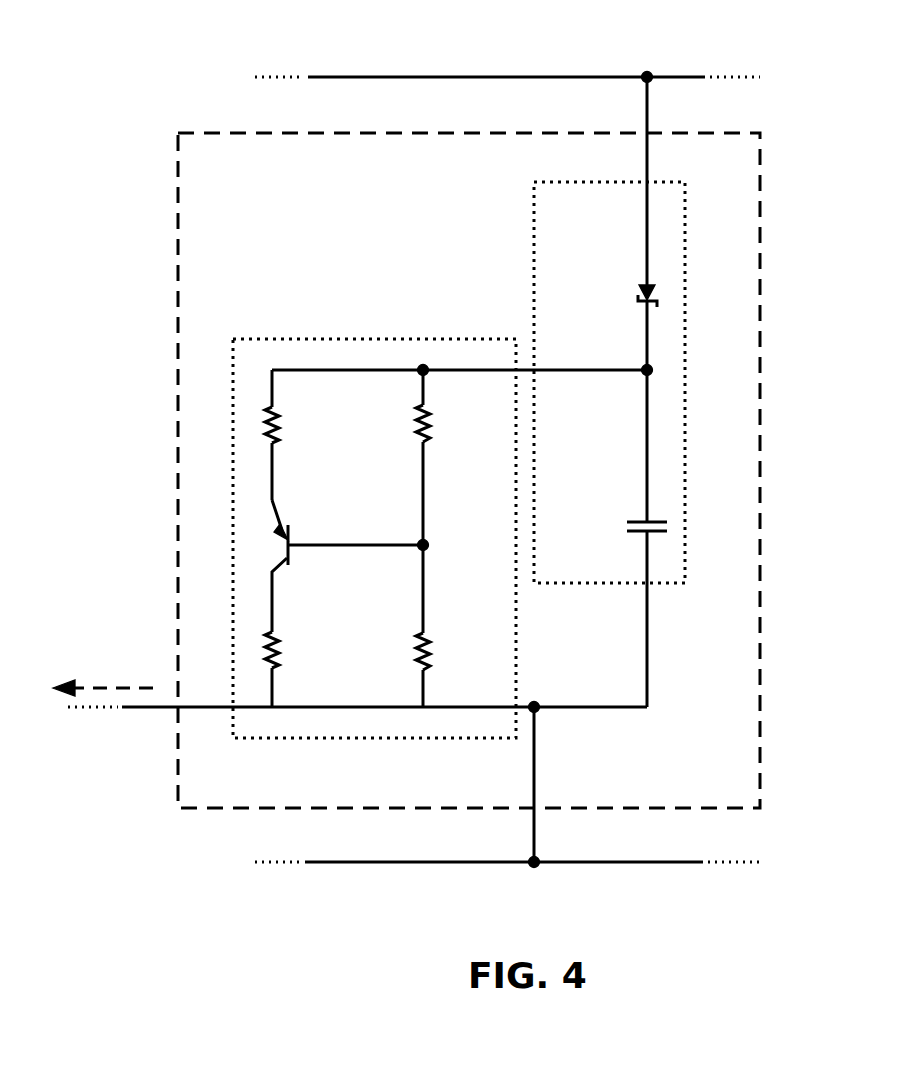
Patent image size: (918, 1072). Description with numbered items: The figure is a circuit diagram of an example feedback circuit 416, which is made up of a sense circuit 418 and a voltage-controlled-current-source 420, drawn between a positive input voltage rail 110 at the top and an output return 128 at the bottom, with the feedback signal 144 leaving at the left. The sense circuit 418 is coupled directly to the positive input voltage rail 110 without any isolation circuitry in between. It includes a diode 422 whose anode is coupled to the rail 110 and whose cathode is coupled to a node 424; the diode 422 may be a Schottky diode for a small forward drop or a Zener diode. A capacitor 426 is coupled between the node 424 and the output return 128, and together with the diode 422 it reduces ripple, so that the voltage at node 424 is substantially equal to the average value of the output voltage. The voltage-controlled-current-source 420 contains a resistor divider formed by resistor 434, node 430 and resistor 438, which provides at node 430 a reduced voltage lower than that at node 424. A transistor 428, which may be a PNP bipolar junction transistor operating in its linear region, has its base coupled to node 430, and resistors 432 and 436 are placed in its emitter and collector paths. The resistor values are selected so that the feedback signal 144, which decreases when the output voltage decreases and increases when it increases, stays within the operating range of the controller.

The positive input voltage rail 110 is at (491, 69).
The output return 128 is at (480, 870).
The feedback signal 144 is at (112, 674).
The feedback circuit 416 is at (773, 141).
The sense circuit 418 is at (526, 222).
The voltage-controlled-current-source 420 is at (272, 331).
The diode 422 is at (631, 286).
The node 424 is at (641, 362).
The capacitor 426 is at (625, 518).
The transistor 428 is at (300, 536).
The node 430 is at (430, 536).
The resistor 432 is at (288, 428).
The resistor 434 is at (440, 424).
The resistor 436 is at (295, 652).
The resistor 438 is at (435, 640).